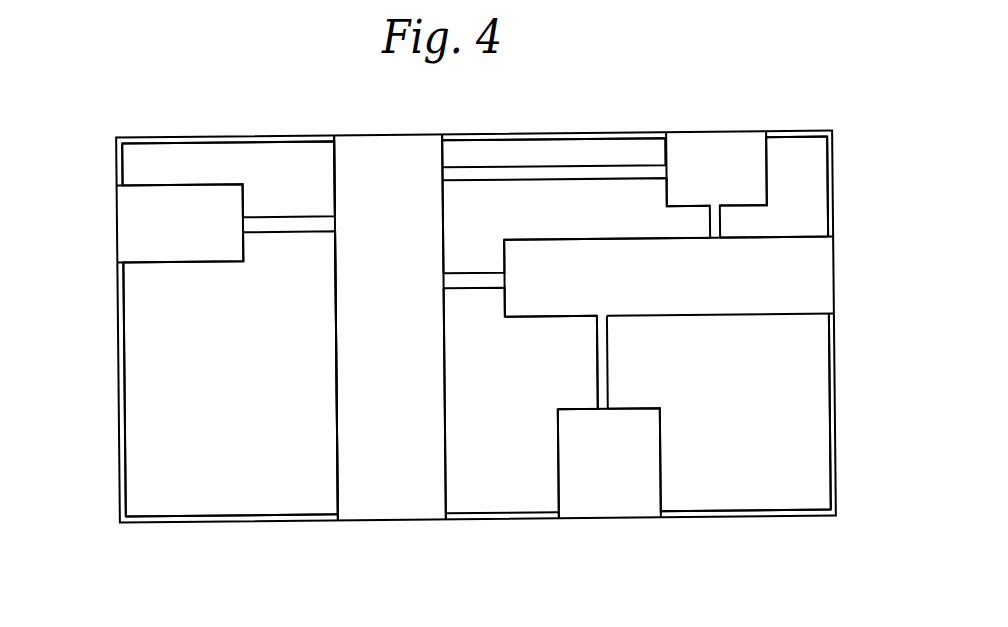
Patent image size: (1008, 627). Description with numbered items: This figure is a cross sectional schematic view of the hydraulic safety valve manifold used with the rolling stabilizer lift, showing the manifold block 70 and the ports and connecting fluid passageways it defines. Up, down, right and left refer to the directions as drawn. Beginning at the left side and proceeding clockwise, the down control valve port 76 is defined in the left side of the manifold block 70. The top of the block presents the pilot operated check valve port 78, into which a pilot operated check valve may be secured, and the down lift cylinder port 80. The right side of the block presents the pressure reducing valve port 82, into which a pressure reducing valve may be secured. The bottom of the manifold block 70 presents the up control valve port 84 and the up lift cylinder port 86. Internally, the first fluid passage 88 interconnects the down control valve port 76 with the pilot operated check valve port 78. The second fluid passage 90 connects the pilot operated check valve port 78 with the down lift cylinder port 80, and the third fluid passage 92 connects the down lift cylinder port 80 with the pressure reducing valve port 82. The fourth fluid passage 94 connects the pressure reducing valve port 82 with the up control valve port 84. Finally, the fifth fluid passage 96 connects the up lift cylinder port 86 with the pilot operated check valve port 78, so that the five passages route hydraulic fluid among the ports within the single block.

The manifold block 70 is at (746, 95).
The down control valve port 76 is at (117, 230).
The pilot operated check valve port 78 is at (402, 135).
The down lift cylinder port 80 is at (692, 130).
The pressure reducing valve port 82 is at (835, 263).
The up control valve port 84 is at (603, 517).
The up lift cylinder port 86 is at (376, 519).
The first fluid passage 88 is at (292, 215).
The second fluid passage 90 is at (557, 165).
The third fluid passage 92 is at (721, 227).
The fourth fluid passage 94 is at (608, 377).
The fifth fluid passage 96 is at (337, 393).